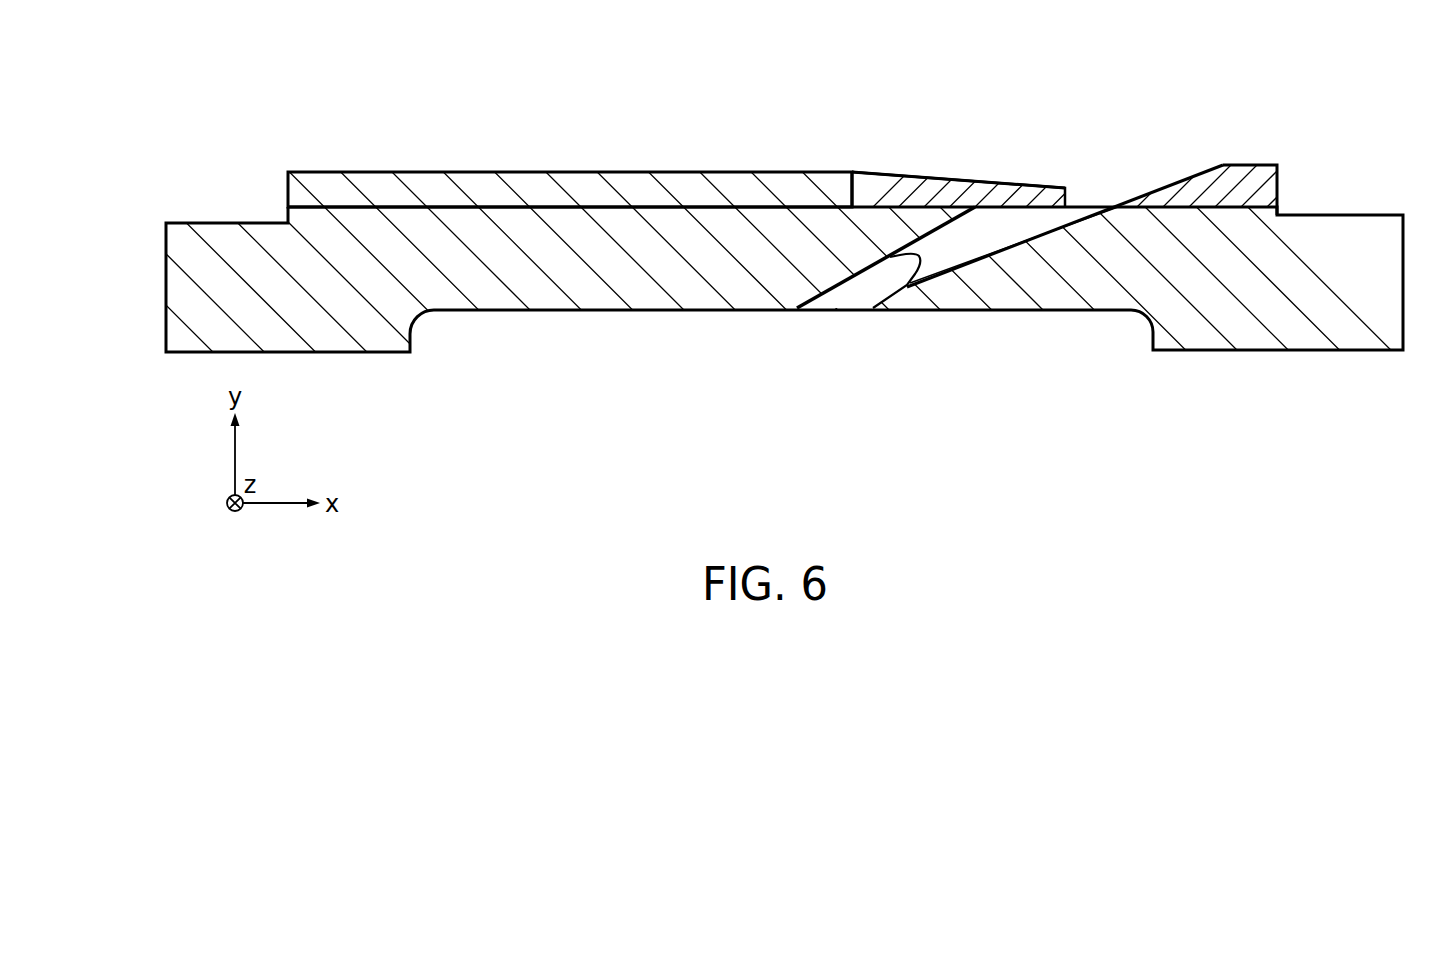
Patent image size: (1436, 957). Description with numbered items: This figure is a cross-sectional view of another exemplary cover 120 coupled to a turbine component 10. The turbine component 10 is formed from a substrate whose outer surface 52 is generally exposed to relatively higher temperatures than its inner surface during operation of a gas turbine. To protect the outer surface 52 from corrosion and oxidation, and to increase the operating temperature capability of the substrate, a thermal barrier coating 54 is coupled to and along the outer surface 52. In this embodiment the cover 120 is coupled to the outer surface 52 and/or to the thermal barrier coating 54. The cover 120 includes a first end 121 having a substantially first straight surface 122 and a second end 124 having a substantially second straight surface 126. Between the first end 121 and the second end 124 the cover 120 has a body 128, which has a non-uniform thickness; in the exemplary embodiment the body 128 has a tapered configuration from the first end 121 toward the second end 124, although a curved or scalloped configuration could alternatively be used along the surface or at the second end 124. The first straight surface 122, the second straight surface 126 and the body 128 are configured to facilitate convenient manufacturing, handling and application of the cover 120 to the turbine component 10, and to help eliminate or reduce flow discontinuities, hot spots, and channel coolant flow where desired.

The turbine component 10 is at (238, 185).
The outer surface 52 is at (509, 212).
The thermal barrier coating 54 is at (393, 180).
The cover 120 is at (898, 175).
The first end 121 is at (850, 186).
The first straight surface 122 is at (863, 172).
The second end 124 is at (1065, 197).
The second straight surface 126 is at (1067, 200).
The body 128 is at (963, 187).